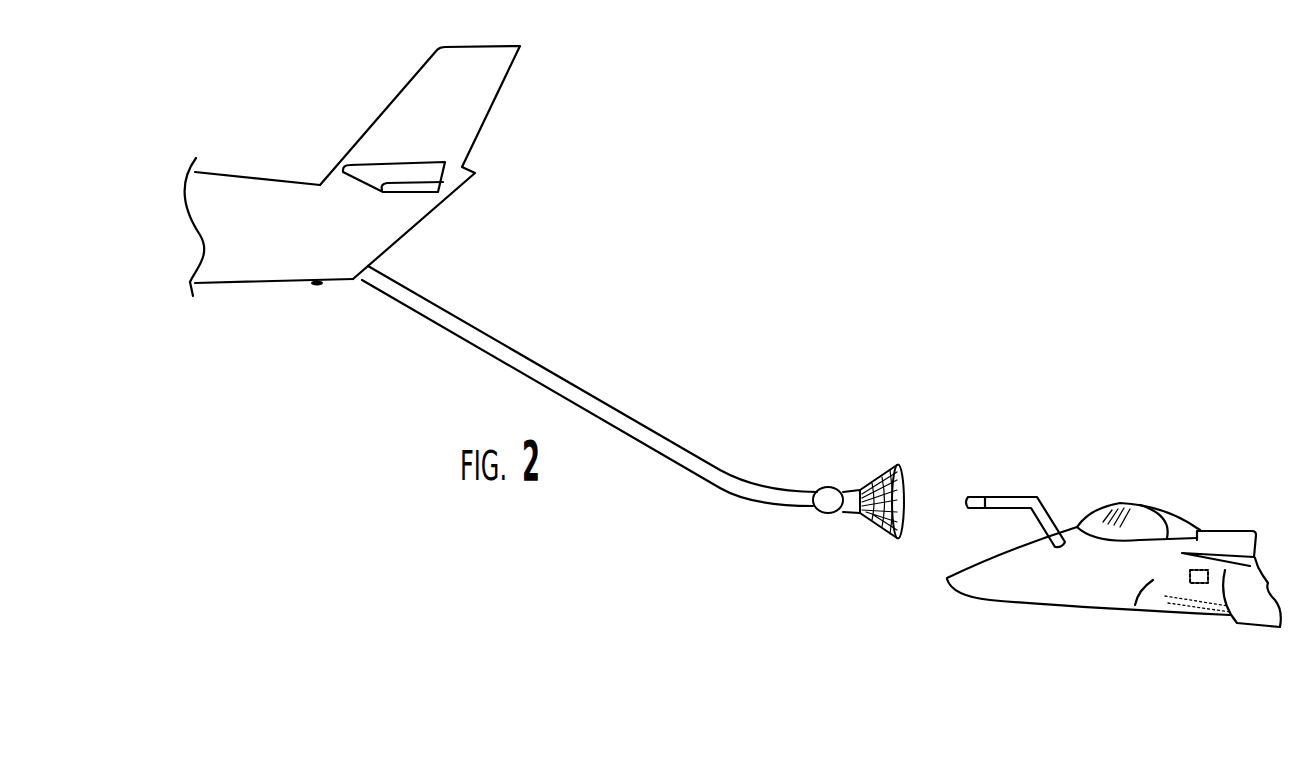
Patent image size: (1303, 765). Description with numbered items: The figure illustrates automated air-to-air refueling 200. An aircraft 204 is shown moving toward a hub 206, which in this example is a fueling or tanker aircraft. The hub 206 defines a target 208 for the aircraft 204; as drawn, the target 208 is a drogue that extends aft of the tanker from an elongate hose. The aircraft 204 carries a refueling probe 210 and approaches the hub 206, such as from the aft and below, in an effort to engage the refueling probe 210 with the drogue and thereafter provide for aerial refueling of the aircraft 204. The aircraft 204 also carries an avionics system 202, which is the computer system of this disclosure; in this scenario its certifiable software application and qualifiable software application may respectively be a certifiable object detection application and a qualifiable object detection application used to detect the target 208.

The automated air-to-air refueling 200 is at (822, 162).
The avionics system 202 is at (1200, 583).
The aircraft 204 is at (1215, 538).
The hub 206 is at (242, 195).
The target 208 is at (830, 478).
The refueling probe 210 is at (1010, 478).